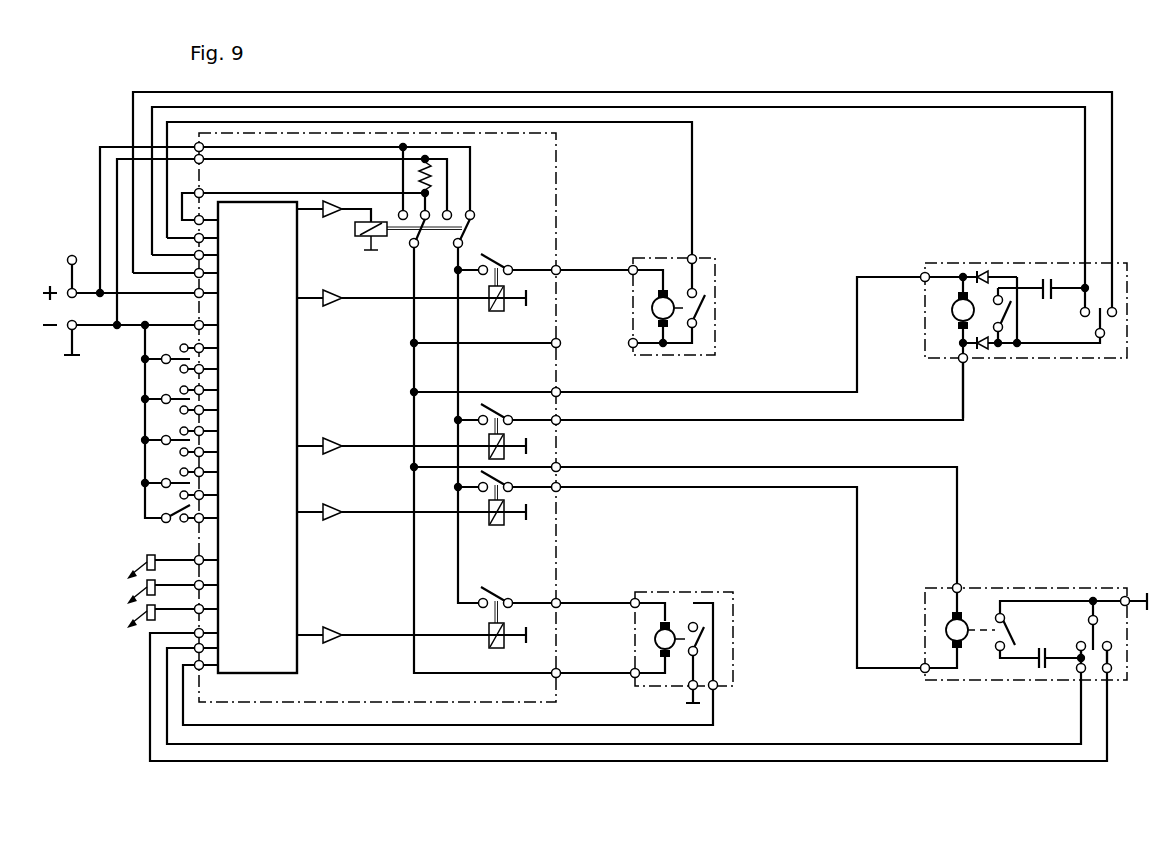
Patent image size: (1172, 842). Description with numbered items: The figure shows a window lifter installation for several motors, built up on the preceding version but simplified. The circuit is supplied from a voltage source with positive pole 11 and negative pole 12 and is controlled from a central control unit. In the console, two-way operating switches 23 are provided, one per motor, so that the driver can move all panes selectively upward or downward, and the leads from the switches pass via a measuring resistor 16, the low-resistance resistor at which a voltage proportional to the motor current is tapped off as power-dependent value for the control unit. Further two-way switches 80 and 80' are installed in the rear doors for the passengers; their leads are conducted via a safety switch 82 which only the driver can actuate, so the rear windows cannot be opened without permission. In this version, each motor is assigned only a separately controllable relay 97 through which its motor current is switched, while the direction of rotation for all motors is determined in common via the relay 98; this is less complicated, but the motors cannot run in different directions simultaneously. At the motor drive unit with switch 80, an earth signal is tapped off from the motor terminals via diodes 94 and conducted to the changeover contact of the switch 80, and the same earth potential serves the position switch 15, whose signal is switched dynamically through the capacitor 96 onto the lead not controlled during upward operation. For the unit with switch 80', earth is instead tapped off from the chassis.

The positive pole 11 is at (72, 255).
The negative pole 12 is at (80, 328).
The operating switch 23 is at (173, 345).
The safety switch 82 is at (176, 525).
The measuring resistor 16 is at (420, 170).
The relay 98 is at (388, 237).
The relay 97 is at (497, 313).
The diode 94 is at (985, 270).
The capacitor 96 is at (1047, 278).
The position switch 15 is at (1012, 316).
The switch 80 is at (1024, 318).
The switch 80' is at (1034, 608).